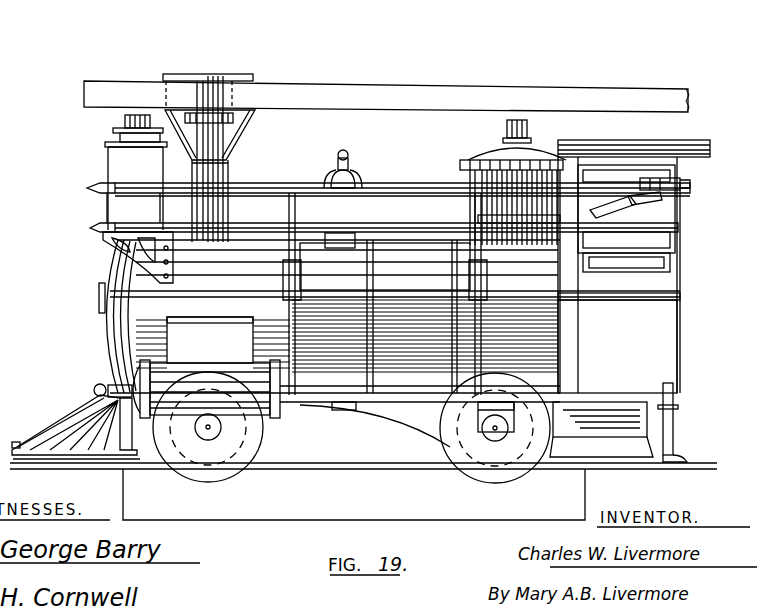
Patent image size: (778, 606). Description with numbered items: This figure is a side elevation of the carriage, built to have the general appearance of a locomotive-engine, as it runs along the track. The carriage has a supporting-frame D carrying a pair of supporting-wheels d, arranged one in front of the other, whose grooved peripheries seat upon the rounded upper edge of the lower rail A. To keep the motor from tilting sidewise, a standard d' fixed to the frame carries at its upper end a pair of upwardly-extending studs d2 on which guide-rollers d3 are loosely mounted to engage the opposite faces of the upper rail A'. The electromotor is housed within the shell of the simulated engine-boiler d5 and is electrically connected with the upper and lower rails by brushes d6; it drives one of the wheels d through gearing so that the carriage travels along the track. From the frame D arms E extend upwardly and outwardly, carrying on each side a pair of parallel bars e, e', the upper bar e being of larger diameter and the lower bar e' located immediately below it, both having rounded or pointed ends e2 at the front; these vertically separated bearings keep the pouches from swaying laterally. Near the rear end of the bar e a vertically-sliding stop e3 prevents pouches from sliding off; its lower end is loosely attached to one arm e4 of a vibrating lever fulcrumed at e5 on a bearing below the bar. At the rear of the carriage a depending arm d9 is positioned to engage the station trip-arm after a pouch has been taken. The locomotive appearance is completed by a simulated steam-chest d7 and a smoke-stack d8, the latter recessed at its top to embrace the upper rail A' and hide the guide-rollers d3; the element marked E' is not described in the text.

The upper rail A' is at (386, 96).
The rail A is at (363, 489).
The smoke-stack d8 is at (172, 76).
The guide-rollers d3 is at (200, 96).
The studs d2 is at (216, 84).
The brushes d6 is at (233, 108).
The standard d' is at (228, 189).
The rounded or pointed ends e2 is at (97, 186).
The bar e is at (402, 180).
The bar e' is at (396, 218).
The steam-chest d7 is at (522, 148).
The vertically-sliding stop e3 is at (658, 186).
The arm of vibrating lever e4 is at (645, 210).
The fulcrum e5 is at (613, 212).
The front post E' is at (274, 280).
The arms E is at (488, 280).
The simulated engine-boiler d5 is at (385, 266).
The supporting-frame D is at (322, 402).
The supporting-wheels d is at (351, 439).
The depending arm d9 is at (673, 438).